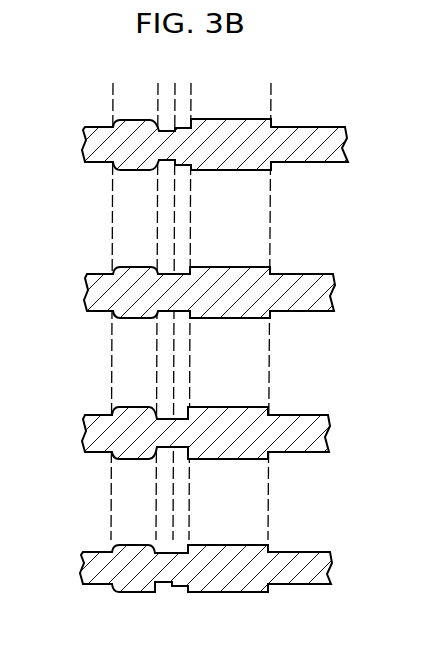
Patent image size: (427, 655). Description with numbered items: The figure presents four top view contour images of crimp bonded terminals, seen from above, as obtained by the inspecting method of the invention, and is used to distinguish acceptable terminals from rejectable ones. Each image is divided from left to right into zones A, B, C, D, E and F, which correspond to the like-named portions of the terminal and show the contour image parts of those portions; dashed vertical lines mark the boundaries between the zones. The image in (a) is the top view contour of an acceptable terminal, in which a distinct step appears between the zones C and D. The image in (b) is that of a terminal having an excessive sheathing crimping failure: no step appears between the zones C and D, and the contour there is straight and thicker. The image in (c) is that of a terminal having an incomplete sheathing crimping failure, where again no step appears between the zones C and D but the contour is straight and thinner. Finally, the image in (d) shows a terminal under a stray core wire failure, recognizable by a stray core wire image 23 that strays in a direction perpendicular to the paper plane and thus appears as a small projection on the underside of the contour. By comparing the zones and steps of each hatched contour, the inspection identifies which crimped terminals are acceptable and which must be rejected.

The stray core wire image 23 is at (158, 586).
The zone A is at (101, 306).
The zone B is at (142, 306).
The zone C is at (168, 306).
The zone D is at (183, 306).
The zone E is at (245, 306).
The zone F is at (285, 96).
The top view contour image of an acceptable terminal a is at (207, 144).
The contour image of a terminal having an excessive sheathing crimping failure b is at (199, 292).
The contour image of a terminal having an incomplete sheathing crimping failure c is at (198, 433).
The contour image of a terminal under a stray core wire failure d is at (195, 585).